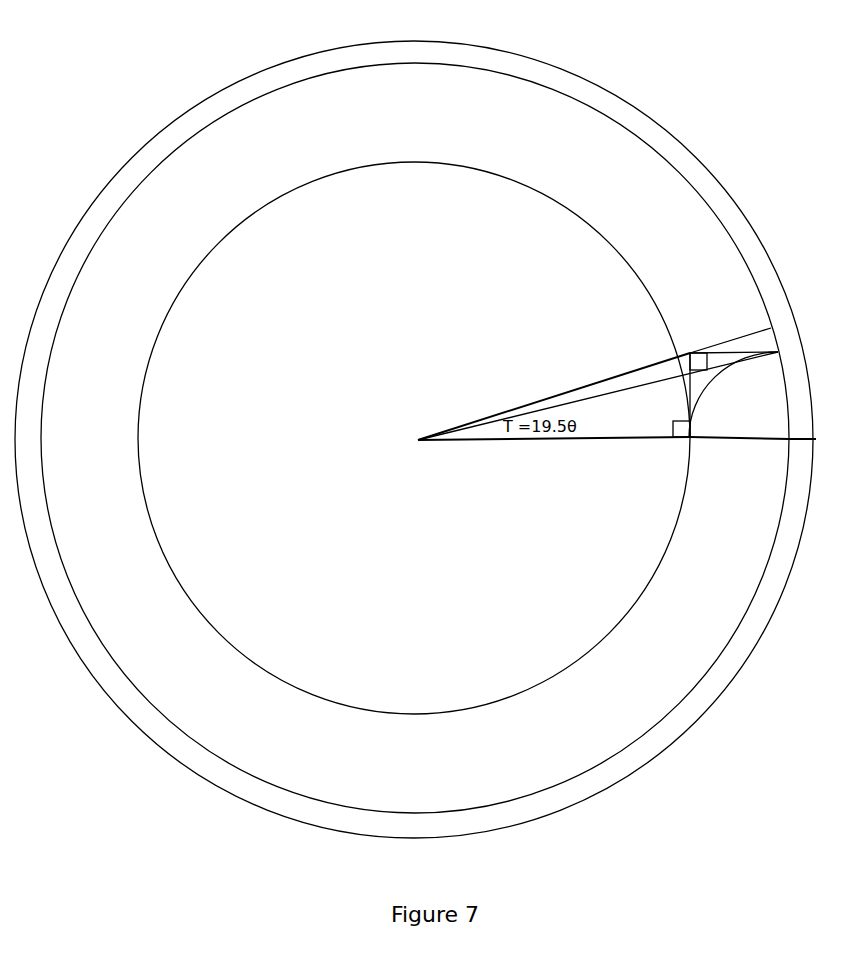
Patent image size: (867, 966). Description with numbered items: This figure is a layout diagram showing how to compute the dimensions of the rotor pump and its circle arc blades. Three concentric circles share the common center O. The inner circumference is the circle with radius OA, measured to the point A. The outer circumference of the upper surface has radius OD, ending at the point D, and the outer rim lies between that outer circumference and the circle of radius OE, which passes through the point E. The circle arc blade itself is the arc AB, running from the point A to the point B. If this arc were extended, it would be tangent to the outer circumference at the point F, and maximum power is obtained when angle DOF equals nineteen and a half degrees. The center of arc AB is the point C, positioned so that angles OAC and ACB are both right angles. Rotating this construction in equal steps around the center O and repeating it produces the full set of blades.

The common center O is at (592, 409).
The inner circumference point A is at (681, 409).
The blade arc end point B is at (745, 392).
The center of arc AB C is at (695, 351).
The outer circumference point D is at (739, 451).
The outer rim point E is at (812, 452).
The tangent point F is at (730, 333).